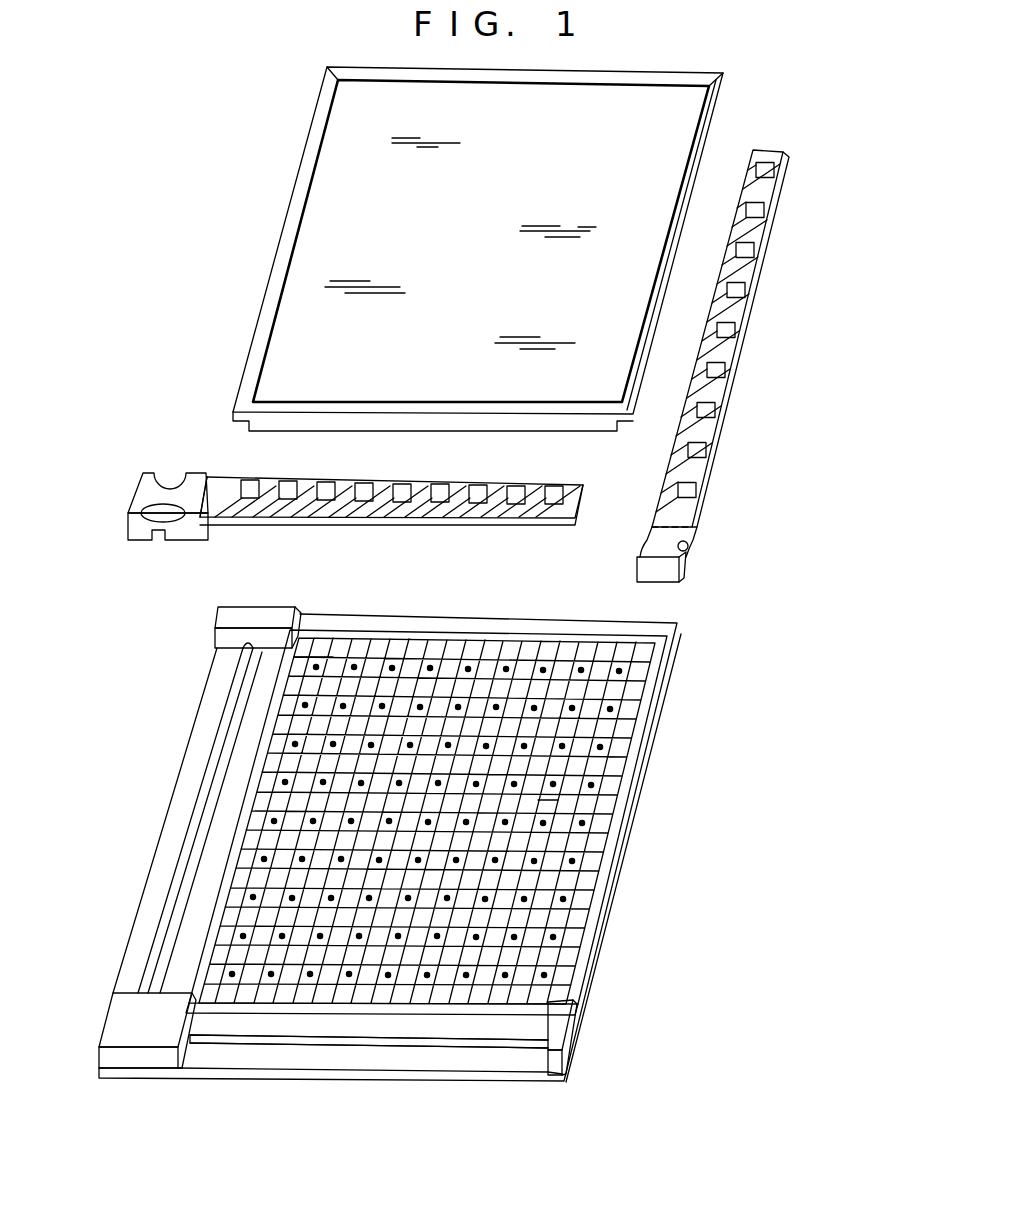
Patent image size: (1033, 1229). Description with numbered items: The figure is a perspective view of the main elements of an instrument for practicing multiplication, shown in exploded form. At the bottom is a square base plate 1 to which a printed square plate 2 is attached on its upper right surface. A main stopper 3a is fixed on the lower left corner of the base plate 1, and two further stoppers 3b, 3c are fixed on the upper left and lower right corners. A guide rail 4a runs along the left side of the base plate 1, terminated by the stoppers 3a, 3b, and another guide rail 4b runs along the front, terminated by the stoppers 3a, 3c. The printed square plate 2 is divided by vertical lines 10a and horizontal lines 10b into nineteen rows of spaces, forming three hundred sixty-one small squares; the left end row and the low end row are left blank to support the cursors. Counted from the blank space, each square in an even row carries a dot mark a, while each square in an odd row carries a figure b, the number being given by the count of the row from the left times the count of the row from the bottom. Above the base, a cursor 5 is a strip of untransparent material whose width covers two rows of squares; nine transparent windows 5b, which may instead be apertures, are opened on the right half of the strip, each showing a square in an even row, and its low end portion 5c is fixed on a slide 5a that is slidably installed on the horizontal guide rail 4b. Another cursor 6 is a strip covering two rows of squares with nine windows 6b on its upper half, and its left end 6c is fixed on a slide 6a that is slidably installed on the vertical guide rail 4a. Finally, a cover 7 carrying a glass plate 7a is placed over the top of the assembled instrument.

The base plate 1 is at (180, 778).
The printed square plate 2 is at (469, 845).
The main stopper 3a is at (138, 1028).
The stopper 3b is at (220, 618).
The stopper 3c is at (553, 1030).
The guide rail 4a is at (176, 868).
The guide rail 4b is at (450, 1040).
The cursor 5 is at (718, 371).
The slide 5a is at (667, 563).
The transparent windows 5b is at (717, 440).
The low end portion 5c is at (680, 519).
The cursor 6 is at (387, 503).
The slide 6a is at (152, 485).
The windows 6b is at (476, 487).
The left end 6c is at (217, 487).
The cover 7 is at (281, 237).
The glass plate 7a is at (346, 162).
The vertical lines 10a is at (650, 716).
The horizontal lines 10b is at (630, 685).
The dot mark a is at (467, 684).
The figure b is at (590, 898).